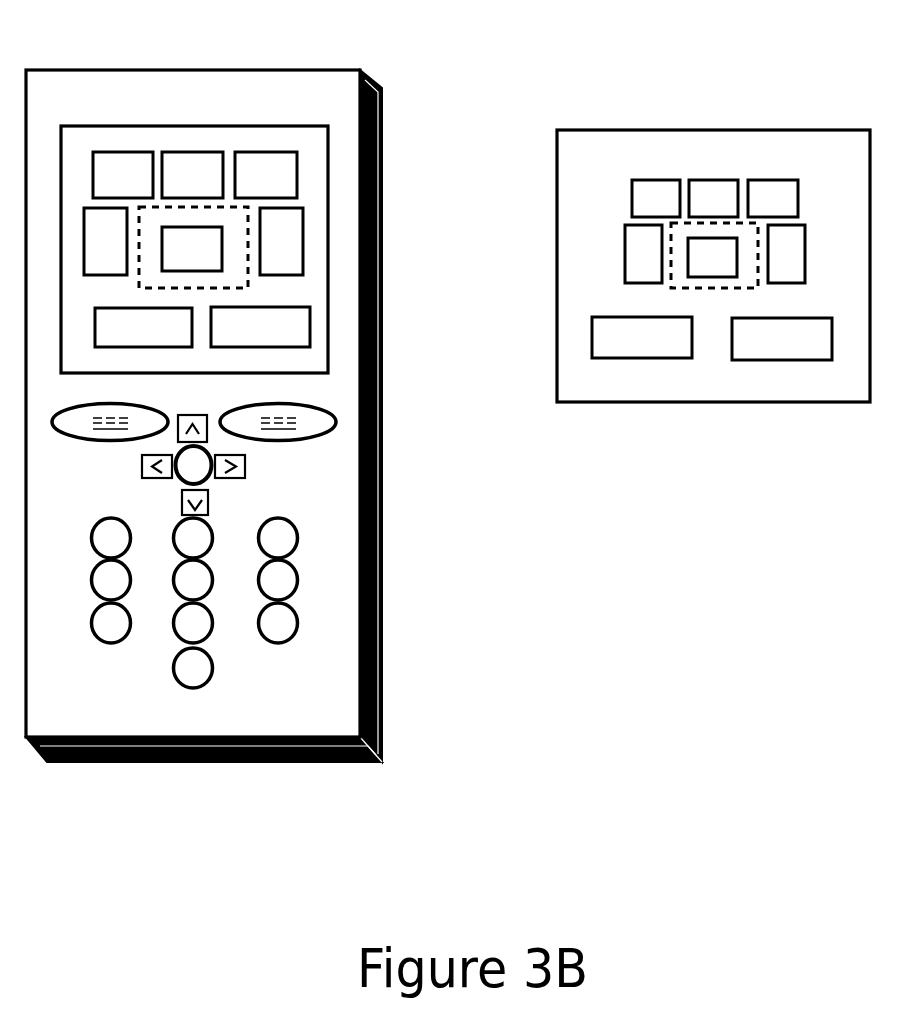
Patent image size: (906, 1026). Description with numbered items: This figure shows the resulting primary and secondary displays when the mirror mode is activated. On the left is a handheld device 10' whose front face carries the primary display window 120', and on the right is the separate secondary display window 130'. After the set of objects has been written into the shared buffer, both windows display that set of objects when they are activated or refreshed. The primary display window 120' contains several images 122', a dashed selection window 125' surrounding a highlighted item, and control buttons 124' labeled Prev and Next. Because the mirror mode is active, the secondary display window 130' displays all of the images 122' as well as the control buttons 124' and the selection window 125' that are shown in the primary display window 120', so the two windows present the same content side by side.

The remote control device 10' is at (350, 423).
The primary display window 120' is at (207, 193).
The images 122' is at (448, 217).
The control buttons 124' is at (344, 339).
The selection window 125' is at (309, 249).
The secondary display window 130' is at (713, 220).